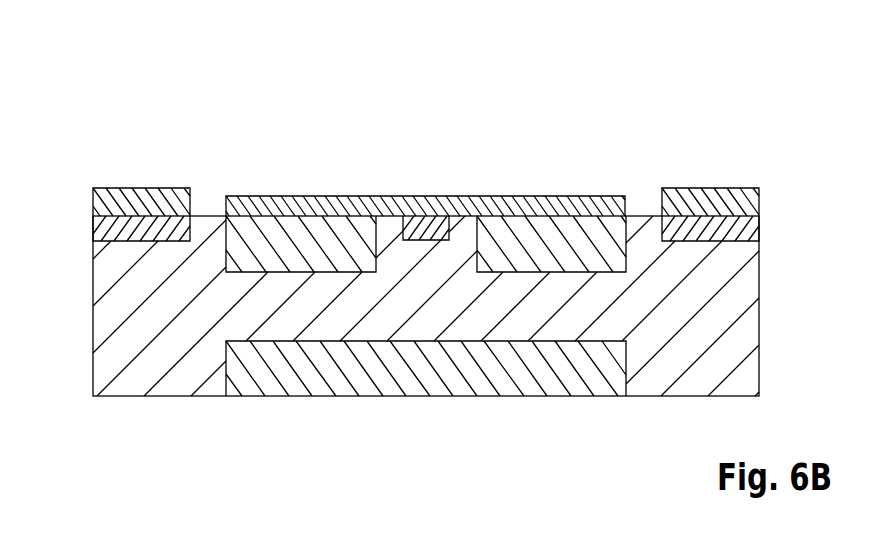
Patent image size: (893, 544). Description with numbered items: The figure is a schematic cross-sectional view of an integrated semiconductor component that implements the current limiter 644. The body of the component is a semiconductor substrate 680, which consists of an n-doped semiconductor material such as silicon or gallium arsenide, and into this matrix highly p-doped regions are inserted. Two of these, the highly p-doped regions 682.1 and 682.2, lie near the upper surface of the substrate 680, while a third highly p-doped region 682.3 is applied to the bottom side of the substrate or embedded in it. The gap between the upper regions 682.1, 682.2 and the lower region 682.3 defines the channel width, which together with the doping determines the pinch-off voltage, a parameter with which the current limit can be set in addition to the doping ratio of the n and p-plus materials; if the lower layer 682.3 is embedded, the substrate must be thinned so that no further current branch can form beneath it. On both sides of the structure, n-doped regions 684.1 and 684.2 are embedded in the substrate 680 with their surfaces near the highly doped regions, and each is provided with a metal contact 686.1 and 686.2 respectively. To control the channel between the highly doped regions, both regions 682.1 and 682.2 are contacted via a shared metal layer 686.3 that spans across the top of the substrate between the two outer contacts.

The current limiter 644 is at (722, 108).
The semiconductor substrate 680 is at (683, 383).
The highly p-doped region 682.1 is at (299, 230).
The highly p-doped region 682.2 is at (550, 230).
The highly p-doped region 682.3 is at (423, 372).
The n-doped region 684.1 is at (110, 229).
The n-doped region 684.2 is at (745, 229).
The metal contact 686.1 is at (142, 192).
The metal contact 686.2 is at (708, 195).
The shared metal layer 686.3 is at (427, 205).